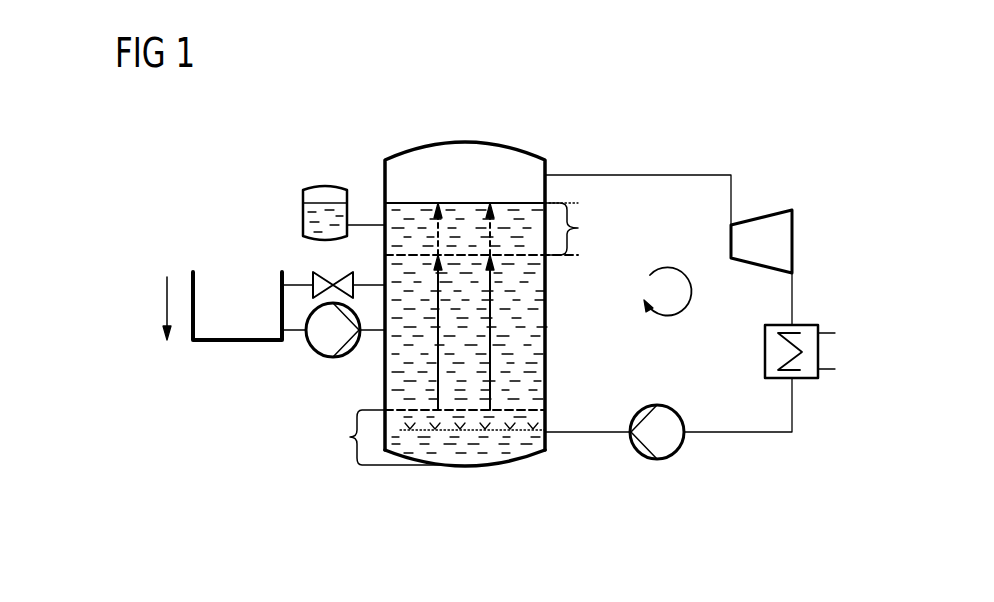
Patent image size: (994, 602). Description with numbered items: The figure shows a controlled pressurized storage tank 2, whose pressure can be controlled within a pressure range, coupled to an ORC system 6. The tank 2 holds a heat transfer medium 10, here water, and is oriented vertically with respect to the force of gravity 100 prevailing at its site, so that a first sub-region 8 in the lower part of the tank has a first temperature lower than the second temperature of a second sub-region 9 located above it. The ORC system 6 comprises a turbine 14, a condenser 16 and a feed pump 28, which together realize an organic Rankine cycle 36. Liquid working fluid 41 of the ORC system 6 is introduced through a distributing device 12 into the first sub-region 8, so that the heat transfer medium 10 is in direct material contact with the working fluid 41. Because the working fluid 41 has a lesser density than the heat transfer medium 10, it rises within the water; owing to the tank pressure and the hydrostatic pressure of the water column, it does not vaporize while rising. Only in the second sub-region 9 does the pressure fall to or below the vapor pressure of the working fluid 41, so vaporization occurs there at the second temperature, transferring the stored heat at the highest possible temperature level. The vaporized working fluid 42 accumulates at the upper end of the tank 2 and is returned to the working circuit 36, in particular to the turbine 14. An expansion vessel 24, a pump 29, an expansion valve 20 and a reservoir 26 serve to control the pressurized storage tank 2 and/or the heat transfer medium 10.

The pressurized storage tank 2 is at (503, 144).
The ORC system 6 is at (726, 151).
The first sub-region 8 is at (437, 437).
The second sub-region 9 is at (494, 229).
The heat transfer medium 10 is at (540, 328).
The distributing device 12 is at (466, 430).
The turbine 14 is at (795, 242).
The condenser 16 is at (818, 352).
The expansion valve 20 is at (313, 282).
The expansion vessel 24 is at (330, 182).
The reservoir 26 is at (253, 342).
The feed pump 28 is at (665, 460).
The pump 29 is at (318, 356).
The organic Rankine cycle 36 is at (665, 268).
The working fluid 41 is at (490, 377).
The vaporized working fluid 42 is at (447, 157).
The force of gravity 100 is at (163, 304).